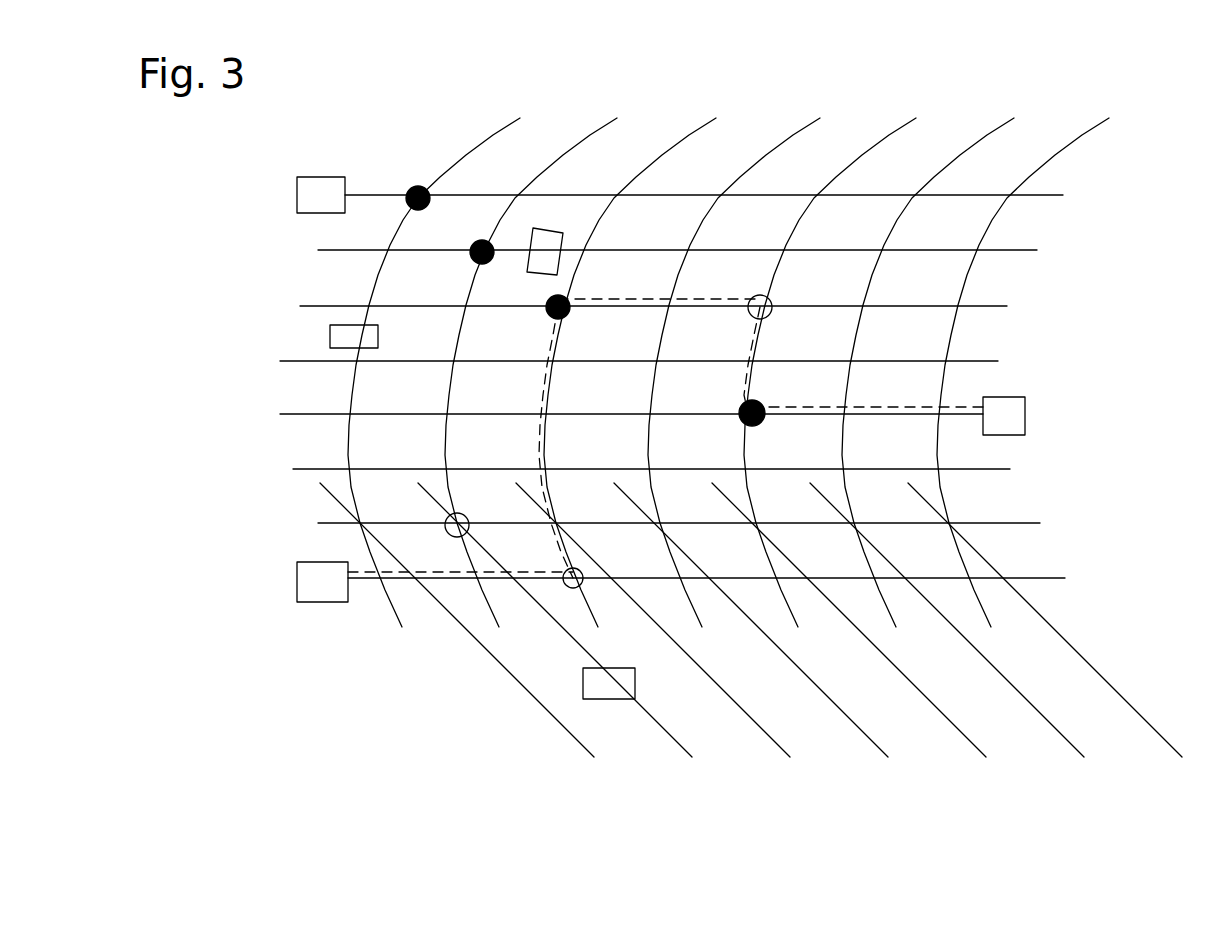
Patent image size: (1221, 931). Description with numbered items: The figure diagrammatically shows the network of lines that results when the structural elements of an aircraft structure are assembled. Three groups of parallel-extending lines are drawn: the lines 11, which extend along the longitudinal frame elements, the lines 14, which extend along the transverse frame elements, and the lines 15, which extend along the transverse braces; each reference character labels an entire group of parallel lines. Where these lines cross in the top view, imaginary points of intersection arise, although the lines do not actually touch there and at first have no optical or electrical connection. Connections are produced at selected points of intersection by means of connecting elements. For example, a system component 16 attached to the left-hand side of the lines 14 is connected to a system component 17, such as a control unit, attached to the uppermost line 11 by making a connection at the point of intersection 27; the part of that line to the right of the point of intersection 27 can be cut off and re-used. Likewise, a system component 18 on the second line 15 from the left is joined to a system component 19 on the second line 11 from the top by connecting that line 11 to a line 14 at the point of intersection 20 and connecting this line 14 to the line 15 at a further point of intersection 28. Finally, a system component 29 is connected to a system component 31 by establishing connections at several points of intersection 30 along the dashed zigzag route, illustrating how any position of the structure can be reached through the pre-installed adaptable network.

The lines 11 is at (372, 195).
The lines 14 is at (1065, 143).
The lines 15 is at (500, 665).
The system component 16 is at (337, 340).
The system component 17 is at (305, 203).
The system component 18 is at (628, 675).
The system component 19 is at (545, 243).
The point of intersection 20 is at (482, 252).
The point of intersection 27 is at (418, 198).
The point of intersection 28 is at (445, 521).
The system component 29 is at (312, 583).
The points of intersection 30 is at (558, 307).
The system component 31 is at (1015, 415).